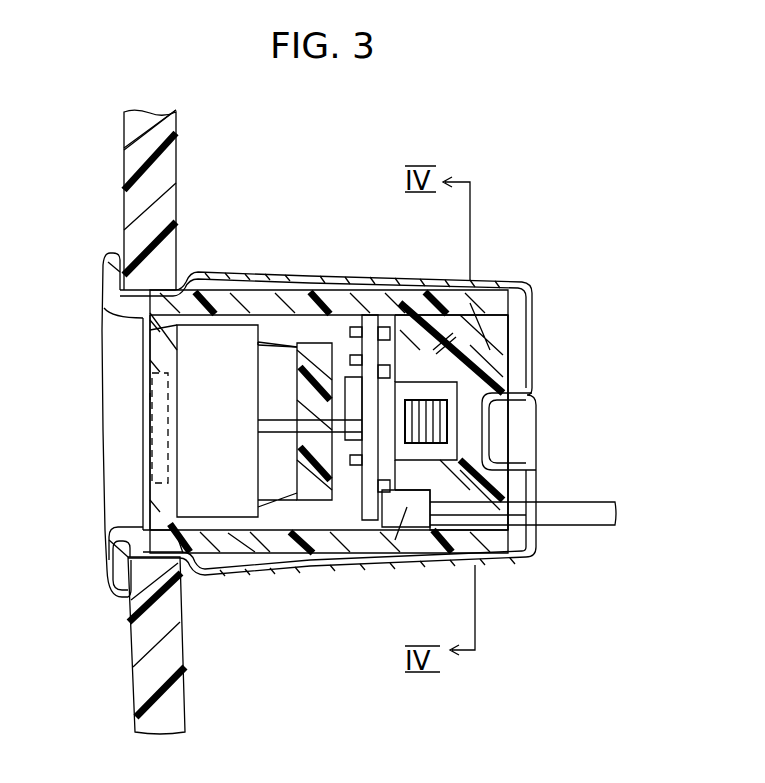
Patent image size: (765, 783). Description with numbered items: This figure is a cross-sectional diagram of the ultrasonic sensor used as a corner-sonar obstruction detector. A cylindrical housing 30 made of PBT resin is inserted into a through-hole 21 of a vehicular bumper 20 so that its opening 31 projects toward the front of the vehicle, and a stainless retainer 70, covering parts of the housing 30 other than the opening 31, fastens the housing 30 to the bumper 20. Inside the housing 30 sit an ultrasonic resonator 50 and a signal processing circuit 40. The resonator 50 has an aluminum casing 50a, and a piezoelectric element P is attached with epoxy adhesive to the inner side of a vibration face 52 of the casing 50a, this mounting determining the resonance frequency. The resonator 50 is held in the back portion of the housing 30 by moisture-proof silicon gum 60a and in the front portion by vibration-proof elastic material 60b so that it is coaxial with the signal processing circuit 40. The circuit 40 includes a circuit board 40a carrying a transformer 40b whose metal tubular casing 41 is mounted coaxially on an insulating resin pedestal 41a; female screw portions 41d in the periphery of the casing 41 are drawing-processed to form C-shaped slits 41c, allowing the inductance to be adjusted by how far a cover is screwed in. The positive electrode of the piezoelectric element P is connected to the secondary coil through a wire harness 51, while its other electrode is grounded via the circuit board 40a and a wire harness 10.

The wire harness 10 is at (572, 505).
The vehicular bumper 20 is at (178, 148).
The through-hole 21 is at (115, 560).
The cylindrical housing 30 is at (97, 253).
The opening 31 is at (127, 527).
The signal processing circuit 40 is at (433, 357).
The circuit board 40a is at (388, 395).
The transformer 40b is at (470, 478).
The tubular casing 41 is at (500, 377).
The pedestal 41a is at (414, 398).
The C-shaped slits 41c is at (452, 335).
The female screw portions 41d is at (500, 433).
The ultrasonic resonator 50 is at (220, 352).
The casing 50a is at (213, 500).
The wire harness 51 is at (292, 495).
The vibration face 52 is at (147, 424).
The moisture proof silicon gum 60a is at (500, 345).
The vibration-proof elastic material 60b is at (267, 513).
The stainless retainer 70 is at (208, 270).
The piezoelectric element P is at (147, 393).